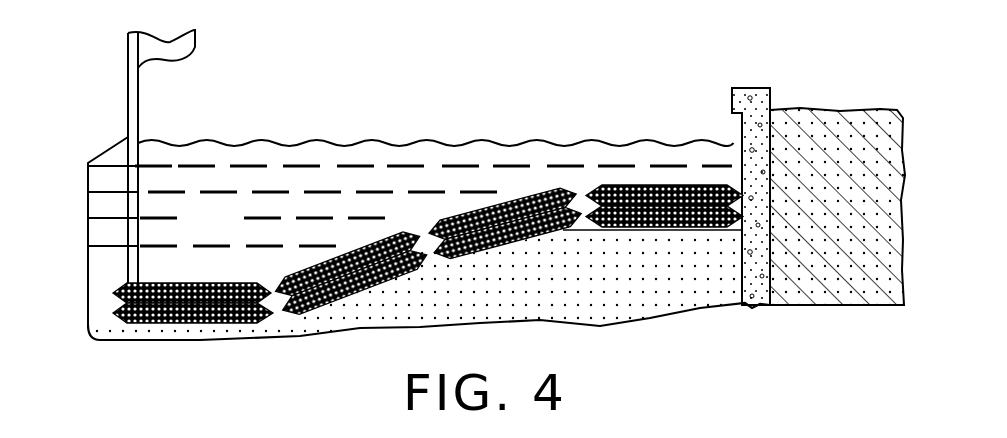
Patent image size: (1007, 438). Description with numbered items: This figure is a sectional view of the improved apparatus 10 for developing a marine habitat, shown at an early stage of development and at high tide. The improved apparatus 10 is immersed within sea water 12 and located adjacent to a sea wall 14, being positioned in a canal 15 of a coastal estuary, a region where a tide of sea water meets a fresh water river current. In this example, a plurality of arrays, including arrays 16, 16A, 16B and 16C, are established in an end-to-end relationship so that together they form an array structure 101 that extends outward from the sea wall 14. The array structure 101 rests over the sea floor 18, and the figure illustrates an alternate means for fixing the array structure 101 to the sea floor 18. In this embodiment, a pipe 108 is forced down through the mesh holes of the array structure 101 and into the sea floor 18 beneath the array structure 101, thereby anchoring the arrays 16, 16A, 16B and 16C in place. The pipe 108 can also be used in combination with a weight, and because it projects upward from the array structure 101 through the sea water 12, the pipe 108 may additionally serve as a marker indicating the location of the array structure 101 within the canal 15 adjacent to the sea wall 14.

The improved apparatus 10 is at (428, 178).
The sea water 12 is at (88, 169).
The sea wall 14 is at (733, 88).
The canal 15 is at (268, 143).
The array 16 is at (668, 184).
The array 16A is at (473, 207).
The array 16B is at (350, 250).
The array 16C is at (207, 283).
The sea floor 18 is at (90, 322).
The array structure 101 is at (529, 170).
The pipe 108 is at (138, 107).